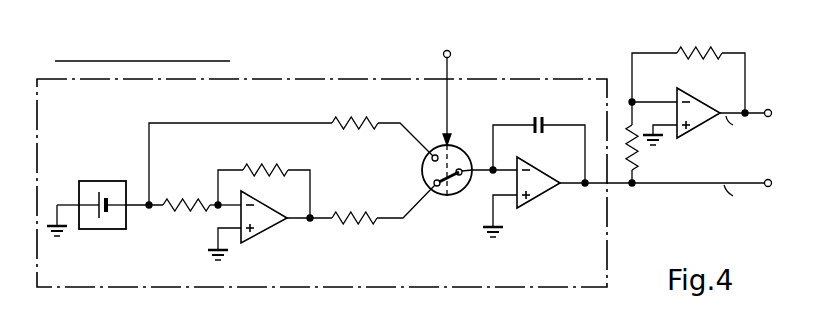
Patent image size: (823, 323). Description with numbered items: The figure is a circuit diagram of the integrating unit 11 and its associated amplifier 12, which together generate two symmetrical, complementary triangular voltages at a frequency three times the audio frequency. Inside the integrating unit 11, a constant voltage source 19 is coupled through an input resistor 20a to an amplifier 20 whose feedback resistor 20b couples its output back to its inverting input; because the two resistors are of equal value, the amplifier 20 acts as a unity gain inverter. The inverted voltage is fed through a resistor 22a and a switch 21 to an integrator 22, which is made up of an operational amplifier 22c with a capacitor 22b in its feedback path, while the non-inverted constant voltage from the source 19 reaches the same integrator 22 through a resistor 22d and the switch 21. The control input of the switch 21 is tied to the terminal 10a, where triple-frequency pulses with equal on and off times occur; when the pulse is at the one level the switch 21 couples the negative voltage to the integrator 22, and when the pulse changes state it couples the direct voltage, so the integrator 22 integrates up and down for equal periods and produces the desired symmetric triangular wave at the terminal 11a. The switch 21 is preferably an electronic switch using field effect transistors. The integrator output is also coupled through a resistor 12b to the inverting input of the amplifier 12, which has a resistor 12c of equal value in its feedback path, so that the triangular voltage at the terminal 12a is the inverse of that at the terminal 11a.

The terminal 10a is at (452, 56).
The integrating unit 11 is at (323, 287).
The terminal 11a is at (769, 194).
The amplifier 12 is at (731, 91).
The terminal 12a is at (788, 113).
The resistor 12b is at (640, 160).
The resistor 12c is at (678, 50).
The constant voltage source 19 is at (87, 181).
The amplifier 20 is at (262, 237).
The input resistor 20a is at (170, 200).
The feedback resistor 20b is at (246, 165).
The switch 21 is at (433, 194).
The integrator 22 is at (568, 168).
The resistor 22a is at (548, 191).
The capacitor 22b is at (548, 98).
The operational amplifier 22c is at (357, 226).
The resistor 22d is at (352, 118).